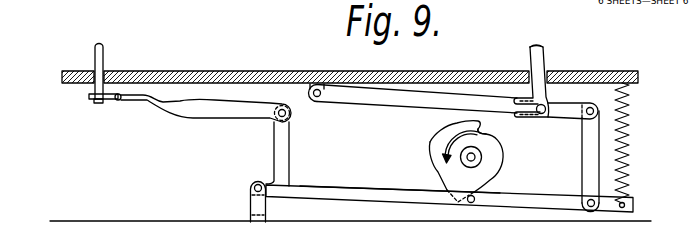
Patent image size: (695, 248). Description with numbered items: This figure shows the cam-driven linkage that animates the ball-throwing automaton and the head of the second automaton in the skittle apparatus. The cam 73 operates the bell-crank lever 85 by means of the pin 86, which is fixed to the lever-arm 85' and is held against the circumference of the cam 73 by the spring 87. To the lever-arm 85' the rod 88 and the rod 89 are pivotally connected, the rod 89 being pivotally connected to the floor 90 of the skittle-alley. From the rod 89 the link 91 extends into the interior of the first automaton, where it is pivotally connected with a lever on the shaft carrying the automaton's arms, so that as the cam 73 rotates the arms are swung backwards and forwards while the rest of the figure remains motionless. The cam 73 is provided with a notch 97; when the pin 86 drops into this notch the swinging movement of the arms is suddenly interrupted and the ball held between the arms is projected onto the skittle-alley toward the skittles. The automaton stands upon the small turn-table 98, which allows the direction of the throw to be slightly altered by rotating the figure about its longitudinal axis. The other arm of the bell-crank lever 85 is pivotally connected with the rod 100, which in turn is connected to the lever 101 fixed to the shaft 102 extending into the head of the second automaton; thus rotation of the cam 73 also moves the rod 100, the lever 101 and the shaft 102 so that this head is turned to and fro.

The cam 73 is at (431, 149).
The bell-crank lever 85 is at (442, 188).
The lever-arm 85' is at (400, 217).
The pin 86 is at (471, 203).
The spring 87 is at (631, 125).
The rod 88 is at (588, 157).
The rod 89 is at (412, 100).
The floor of the skittle-alley 90 is at (291, 86).
The link 91 is at (543, 62).
The notch 97 is at (483, 133).
The turn-table 98 is at (428, 73).
The rod 100 is at (207, 110).
The lever 101 is at (108, 100).
The shaft 102 is at (103, 58).